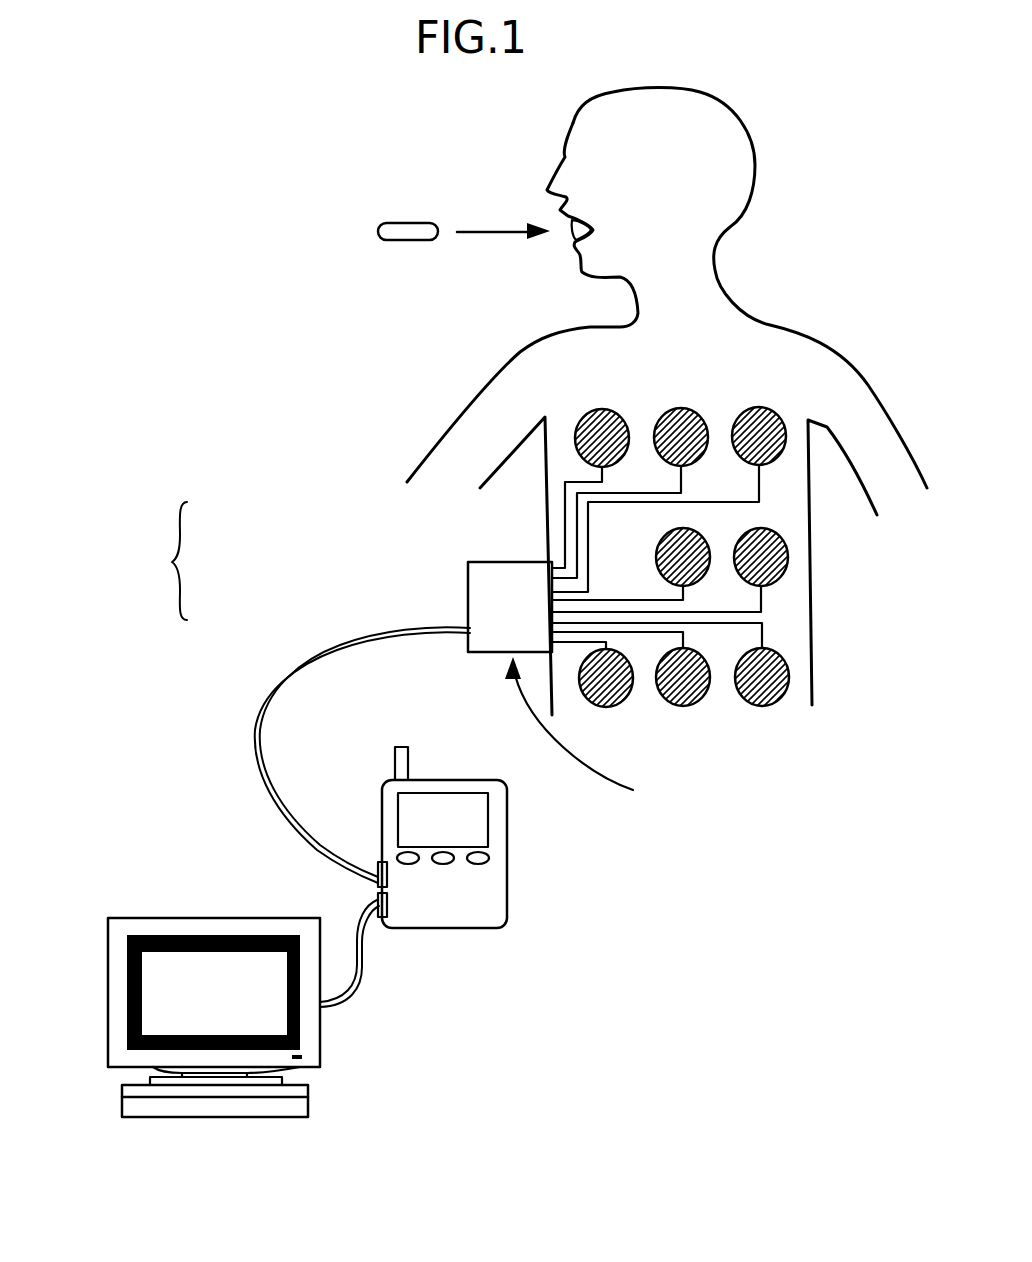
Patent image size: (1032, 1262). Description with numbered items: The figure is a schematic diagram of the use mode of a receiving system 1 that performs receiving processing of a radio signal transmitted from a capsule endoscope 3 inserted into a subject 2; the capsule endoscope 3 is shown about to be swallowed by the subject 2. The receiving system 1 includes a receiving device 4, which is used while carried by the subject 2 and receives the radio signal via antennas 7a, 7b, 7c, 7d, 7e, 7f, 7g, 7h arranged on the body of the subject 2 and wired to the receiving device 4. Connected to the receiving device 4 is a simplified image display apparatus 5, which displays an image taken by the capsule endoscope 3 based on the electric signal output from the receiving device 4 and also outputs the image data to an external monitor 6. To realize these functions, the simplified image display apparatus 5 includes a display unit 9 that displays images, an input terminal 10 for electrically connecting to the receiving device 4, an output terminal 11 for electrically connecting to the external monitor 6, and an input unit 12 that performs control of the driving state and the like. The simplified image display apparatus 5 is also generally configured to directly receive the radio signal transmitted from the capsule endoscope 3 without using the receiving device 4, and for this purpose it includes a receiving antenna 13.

The receiving system 1 is at (114, 561).
The subject 2 is at (738, 120).
The capsule endoscope 3 is at (400, 222).
The receiving device 4 is at (468, 570).
The simplified image display apparatus 5 is at (378, 742).
The external monitor 6 is at (162, 918).
The antenna 7a is at (578, 428).
The antenna 7b is at (681, 408).
The antenna 7c is at (758, 407).
The antenna 7d is at (695, 533).
The antenna 7e is at (772, 531).
The antenna 7f is at (606, 707).
The antenna 7g is at (683, 706).
The antenna 7h is at (762, 706).
The display unit 9 is at (497, 822).
The input terminal 10 is at (375, 865).
The output terminal 11 is at (376, 897).
The input unit 12 is at (390, 870).
The receiving antenna 13 is at (410, 764).